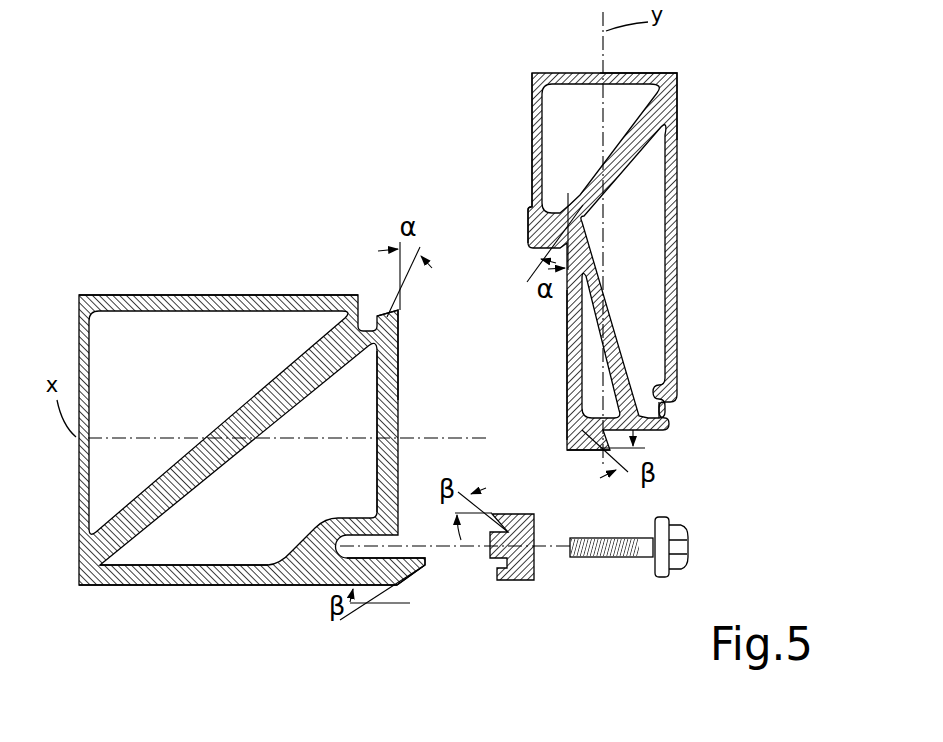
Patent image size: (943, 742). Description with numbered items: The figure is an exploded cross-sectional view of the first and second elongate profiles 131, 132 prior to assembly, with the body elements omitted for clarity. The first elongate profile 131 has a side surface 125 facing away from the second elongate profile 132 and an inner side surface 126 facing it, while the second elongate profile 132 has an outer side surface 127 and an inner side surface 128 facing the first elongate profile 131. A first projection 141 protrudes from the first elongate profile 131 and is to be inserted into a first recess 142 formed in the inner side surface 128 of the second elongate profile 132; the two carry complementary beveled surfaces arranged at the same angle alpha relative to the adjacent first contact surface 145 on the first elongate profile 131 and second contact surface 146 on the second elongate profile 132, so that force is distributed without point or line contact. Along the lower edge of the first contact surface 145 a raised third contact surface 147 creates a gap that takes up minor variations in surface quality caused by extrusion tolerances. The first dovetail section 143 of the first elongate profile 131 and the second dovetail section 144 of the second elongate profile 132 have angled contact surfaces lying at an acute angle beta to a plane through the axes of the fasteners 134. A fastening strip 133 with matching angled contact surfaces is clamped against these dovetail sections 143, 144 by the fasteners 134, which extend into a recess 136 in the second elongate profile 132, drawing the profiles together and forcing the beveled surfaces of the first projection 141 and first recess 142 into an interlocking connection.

The side surface 125 is at (681, 165).
The inner side surface 126 is at (529, 105).
The outer side surface 127 is at (116, 592).
The inner side surface 128 is at (175, 291).
The first elongate profile 131 is at (675, 126).
The second elongate profile 132 is at (113, 295).
The fastening strip 133 is at (522, 582).
The fasteners 134 is at (688, 527).
The recess 136 is at (302, 587).
The first projection 141 is at (545, 256).
The first recess 142 is at (383, 311).
The first dovetail section 143 is at (630, 378).
The second dovetail section 144 is at (417, 590).
The first contact surface 145 is at (568, 362).
The second contact surface 146 is at (400, 408).
The third contact surface 147 is at (566, 437).